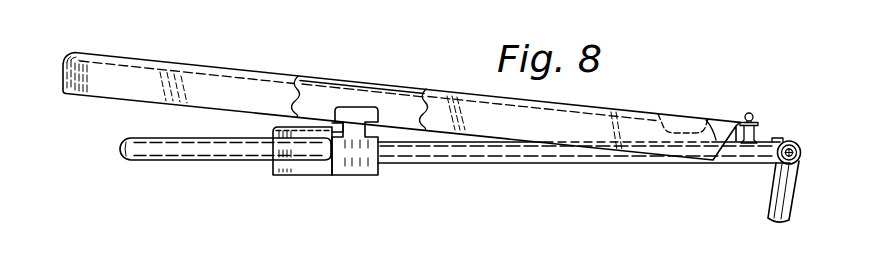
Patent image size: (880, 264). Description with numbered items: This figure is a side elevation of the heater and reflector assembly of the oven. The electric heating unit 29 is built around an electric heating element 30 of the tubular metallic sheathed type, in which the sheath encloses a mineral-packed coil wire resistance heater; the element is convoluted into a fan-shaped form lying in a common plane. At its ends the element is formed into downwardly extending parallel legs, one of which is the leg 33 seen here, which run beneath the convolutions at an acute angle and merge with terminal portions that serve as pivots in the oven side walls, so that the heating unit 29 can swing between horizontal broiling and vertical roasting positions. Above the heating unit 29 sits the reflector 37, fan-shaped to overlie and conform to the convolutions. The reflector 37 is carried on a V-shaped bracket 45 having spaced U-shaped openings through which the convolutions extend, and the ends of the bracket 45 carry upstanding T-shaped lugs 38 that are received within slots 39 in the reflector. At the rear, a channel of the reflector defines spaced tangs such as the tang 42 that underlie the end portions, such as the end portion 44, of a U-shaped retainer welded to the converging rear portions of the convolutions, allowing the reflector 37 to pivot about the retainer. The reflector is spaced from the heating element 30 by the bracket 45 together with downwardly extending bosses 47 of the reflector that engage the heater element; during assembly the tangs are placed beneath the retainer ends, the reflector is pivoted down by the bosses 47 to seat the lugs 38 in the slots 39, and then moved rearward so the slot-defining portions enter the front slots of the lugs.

The electric heating unit 29 is at (229, 66).
The electric heating element 30 is at (131, 160).
The leg 33 is at (784, 189).
The reflector 37 is at (155, 61).
The T-shaped lug 38 is at (369, 108).
The slot 39 is at (340, 81).
The tang 42 is at (758, 124).
The end portion of retainer 44 is at (750, 112).
The V-shaped bracket 45 is at (300, 172).
The boss 47 is at (673, 110).